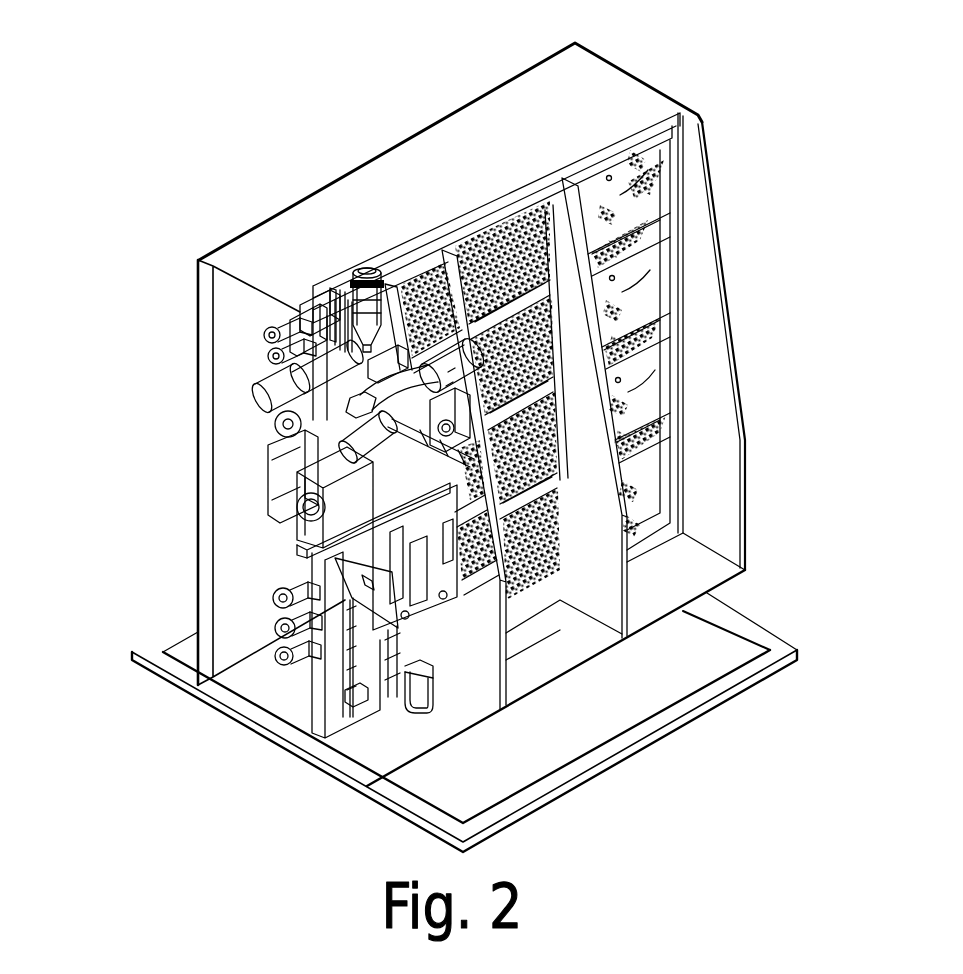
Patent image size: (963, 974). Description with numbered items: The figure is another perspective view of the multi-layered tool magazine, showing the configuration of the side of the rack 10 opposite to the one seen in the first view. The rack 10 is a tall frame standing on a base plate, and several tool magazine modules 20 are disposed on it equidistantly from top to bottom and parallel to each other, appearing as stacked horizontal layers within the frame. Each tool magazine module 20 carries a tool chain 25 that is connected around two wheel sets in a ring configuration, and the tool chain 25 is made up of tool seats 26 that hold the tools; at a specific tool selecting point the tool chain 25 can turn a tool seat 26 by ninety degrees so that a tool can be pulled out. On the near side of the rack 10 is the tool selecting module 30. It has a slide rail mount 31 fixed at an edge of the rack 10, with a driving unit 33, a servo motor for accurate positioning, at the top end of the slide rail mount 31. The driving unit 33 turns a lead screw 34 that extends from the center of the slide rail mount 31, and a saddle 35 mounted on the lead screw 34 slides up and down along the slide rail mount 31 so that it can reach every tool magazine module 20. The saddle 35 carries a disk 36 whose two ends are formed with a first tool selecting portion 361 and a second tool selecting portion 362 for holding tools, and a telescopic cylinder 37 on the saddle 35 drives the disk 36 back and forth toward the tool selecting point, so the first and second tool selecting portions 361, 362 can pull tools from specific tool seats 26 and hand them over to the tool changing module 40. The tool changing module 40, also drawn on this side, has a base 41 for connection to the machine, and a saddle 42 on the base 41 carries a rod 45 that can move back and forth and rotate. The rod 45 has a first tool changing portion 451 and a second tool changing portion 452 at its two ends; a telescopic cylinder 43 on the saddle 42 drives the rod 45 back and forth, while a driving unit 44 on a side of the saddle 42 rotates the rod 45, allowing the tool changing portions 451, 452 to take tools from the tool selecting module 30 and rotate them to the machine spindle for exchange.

The rack 10 is at (529, 406).
The tool magazine module 20 is at (650, 189).
The tool chain 25 is at (638, 157).
The tool seat 26 is at (277, 390).
The tool selecting module 30 is at (331, 234).
The slide rail mount 31 is at (327, 320).
The driving unit 33 is at (368, 272).
The lead screw 34 is at (337, 313).
The saddle 35 is at (307, 312).
The disk 36 is at (290, 400).
The first tool selecting portion 361 is at (257, 385).
The second tool selecting portion 362 is at (290, 432).
The telescopic cylinder 37 is at (436, 300).
The tool changing module 40 is at (257, 528).
The base 41 is at (268, 582).
The saddle 42 is at (277, 533).
The telescopic cylinder 43 is at (277, 498).
The driving unit 44 is at (290, 477).
The rod 45 is at (543, 427).
The first tool changing portion 451 is at (543, 367).
The second tool changing portion 452 is at (455, 490).